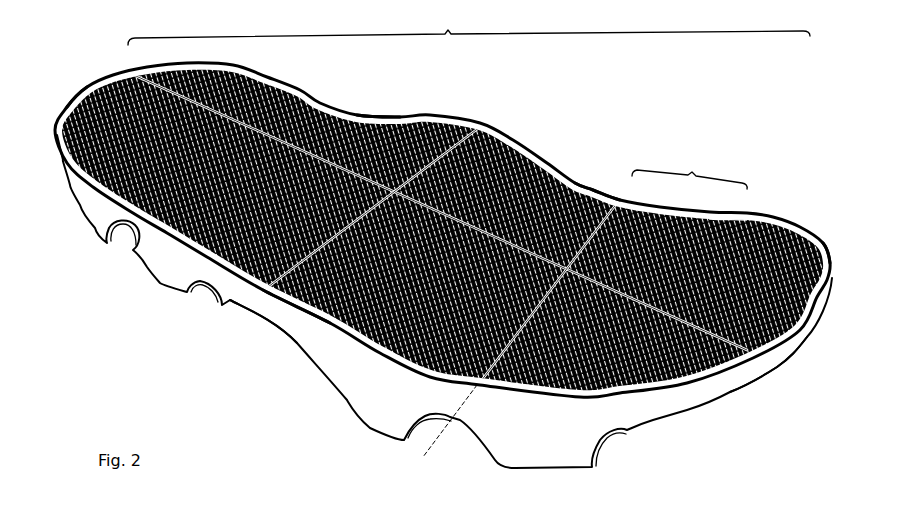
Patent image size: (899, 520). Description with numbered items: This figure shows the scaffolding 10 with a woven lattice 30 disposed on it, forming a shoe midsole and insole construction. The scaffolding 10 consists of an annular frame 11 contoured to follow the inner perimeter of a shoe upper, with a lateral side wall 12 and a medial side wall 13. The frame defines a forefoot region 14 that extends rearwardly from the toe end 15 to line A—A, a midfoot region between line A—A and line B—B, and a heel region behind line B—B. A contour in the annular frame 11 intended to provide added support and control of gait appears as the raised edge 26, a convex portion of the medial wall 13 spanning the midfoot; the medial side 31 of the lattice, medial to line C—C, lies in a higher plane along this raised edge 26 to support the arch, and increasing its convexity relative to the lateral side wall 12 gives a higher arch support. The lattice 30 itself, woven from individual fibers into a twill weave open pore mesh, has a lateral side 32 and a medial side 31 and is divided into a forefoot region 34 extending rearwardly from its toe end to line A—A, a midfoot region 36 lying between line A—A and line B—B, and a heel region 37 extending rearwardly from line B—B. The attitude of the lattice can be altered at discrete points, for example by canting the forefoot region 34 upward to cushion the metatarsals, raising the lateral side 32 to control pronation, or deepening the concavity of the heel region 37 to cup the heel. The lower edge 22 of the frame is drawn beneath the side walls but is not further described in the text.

The insole 10 is at (469, 26).
The side wall 11 is at (677, 397).
The side wall portion 12 is at (353, 400).
The forefoot portion 13 is at (597, 171).
The toe region 14 is at (689, 169).
The toe end 15 is at (822, 243).
The bottom edge 22 is at (730, 392).
The top cushion surface 26 is at (540, 157).
The arch portion 30 is at (380, 117).
The rim 31 is at (507, 138).
The opening 32 is at (383, 353).
The top surface region 34 is at (737, 223).
The rim portion 36 is at (318, 320).
The heel rim 37 is at (80, 100).
The section line A- A is at (627, 190).
The section line B- B is at (480, 127).
The section line C- C is at (127, 72).